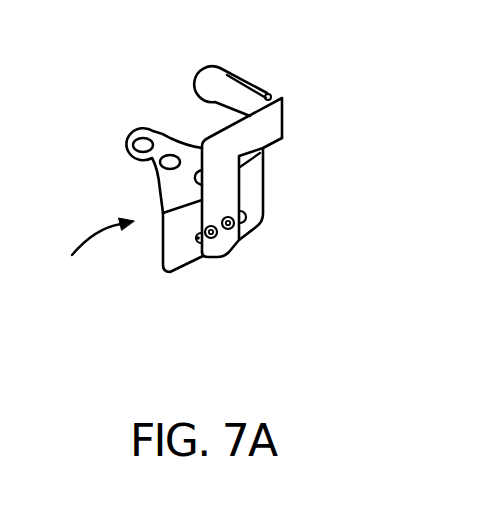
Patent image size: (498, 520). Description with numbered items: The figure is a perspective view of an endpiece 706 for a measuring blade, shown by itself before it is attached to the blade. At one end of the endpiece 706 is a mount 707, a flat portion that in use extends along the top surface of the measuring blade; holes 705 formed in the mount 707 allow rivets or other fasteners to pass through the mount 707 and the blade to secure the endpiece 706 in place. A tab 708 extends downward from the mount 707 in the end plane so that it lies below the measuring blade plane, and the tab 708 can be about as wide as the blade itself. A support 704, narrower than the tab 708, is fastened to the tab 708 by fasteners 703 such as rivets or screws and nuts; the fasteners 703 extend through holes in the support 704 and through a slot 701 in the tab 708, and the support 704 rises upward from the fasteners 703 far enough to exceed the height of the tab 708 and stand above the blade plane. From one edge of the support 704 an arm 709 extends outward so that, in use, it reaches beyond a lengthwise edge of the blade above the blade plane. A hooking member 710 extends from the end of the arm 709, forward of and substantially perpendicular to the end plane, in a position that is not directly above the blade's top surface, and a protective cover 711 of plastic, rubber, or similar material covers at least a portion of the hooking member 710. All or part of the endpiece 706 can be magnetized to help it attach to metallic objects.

The slot 701 is at (196, 243).
The fasteners 703 is at (235, 227).
The support 704 is at (227, 202).
The holes 705 is at (144, 144).
The endpiece 706 is at (79, 250).
The mount 707 is at (132, 158).
The tab 708 is at (167, 258).
The arm 709 is at (272, 130).
The hooking member 710 is at (271, 97).
The protective cover 711 is at (230, 83).